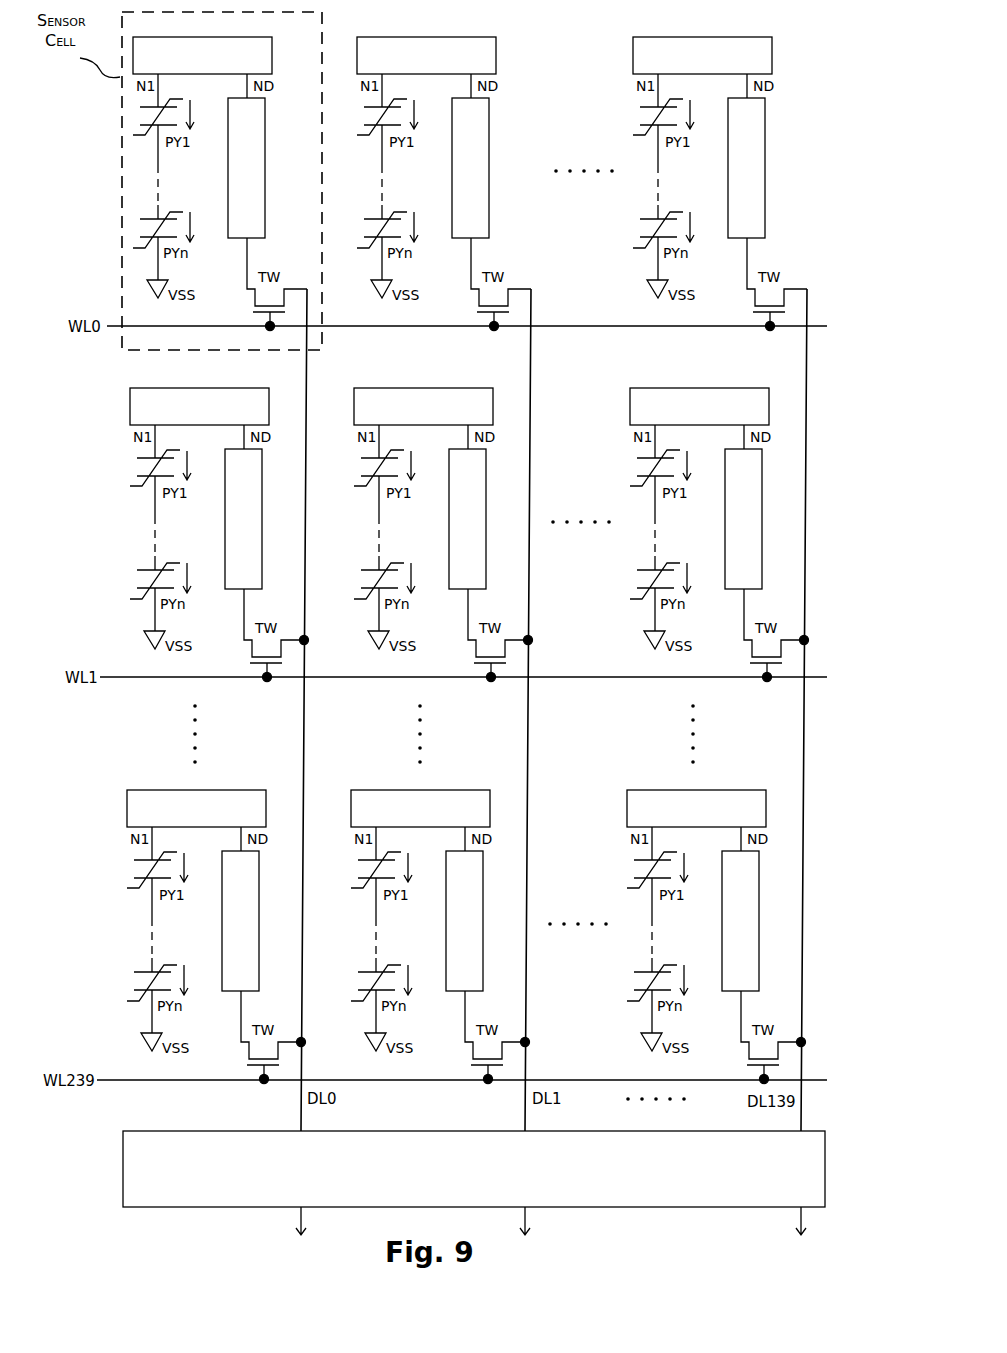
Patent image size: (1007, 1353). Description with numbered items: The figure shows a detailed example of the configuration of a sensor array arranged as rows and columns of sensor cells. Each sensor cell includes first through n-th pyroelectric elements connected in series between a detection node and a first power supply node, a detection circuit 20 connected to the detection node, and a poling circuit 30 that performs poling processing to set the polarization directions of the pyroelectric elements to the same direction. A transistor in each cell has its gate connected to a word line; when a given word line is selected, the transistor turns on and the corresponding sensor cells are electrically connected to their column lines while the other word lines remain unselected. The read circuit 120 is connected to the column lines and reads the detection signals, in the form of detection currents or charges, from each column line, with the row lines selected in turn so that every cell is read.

The detection circuit 20 is at (265, 162).
The poling circuit 30 is at (273, 52).
The read circuit 120 is at (190, 1207).